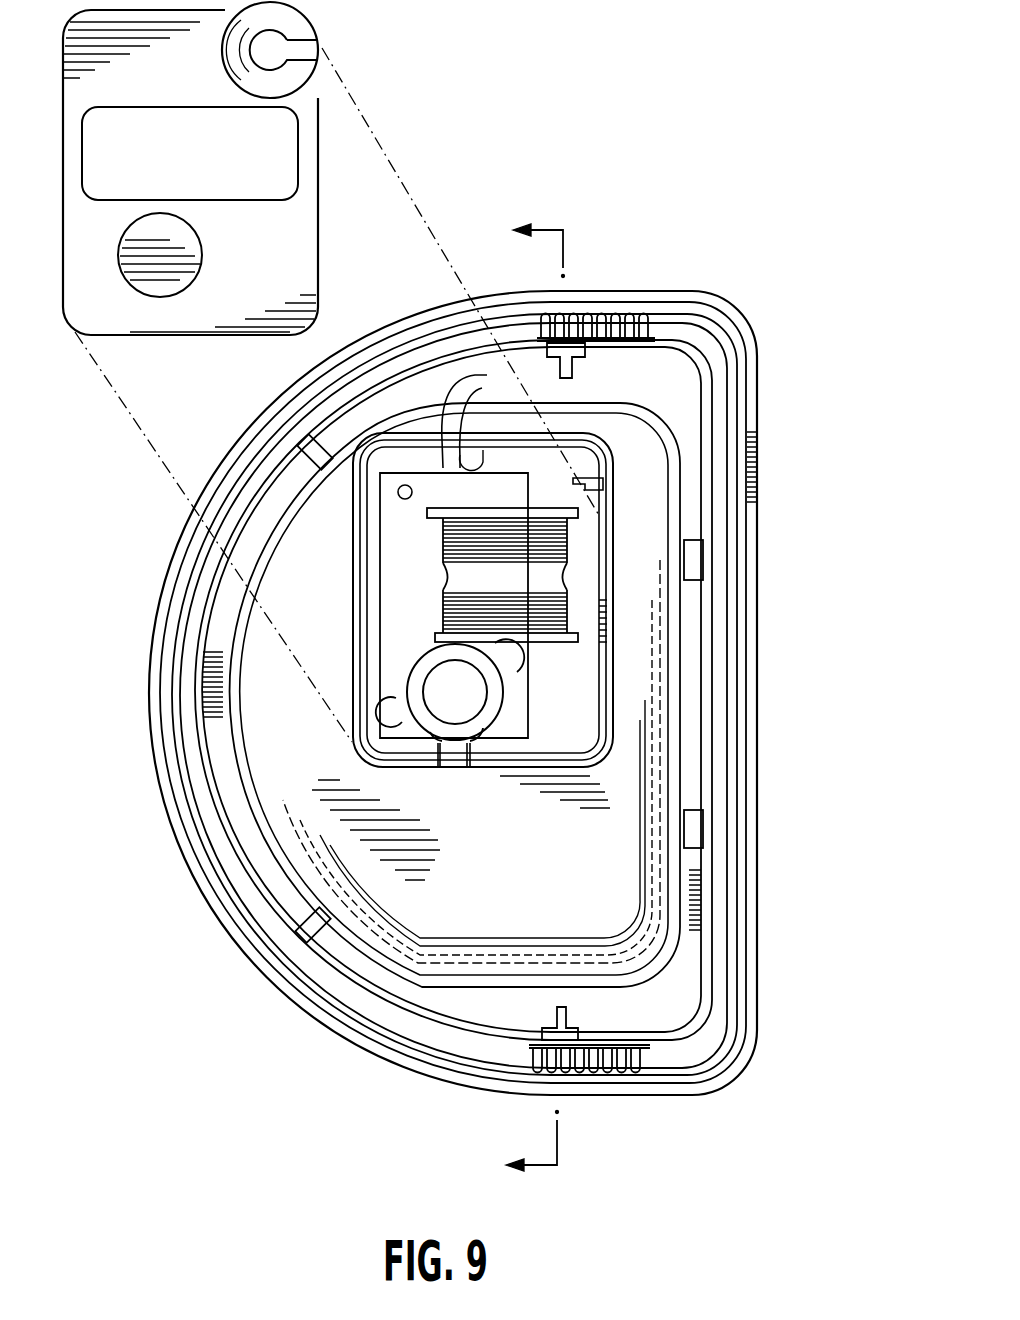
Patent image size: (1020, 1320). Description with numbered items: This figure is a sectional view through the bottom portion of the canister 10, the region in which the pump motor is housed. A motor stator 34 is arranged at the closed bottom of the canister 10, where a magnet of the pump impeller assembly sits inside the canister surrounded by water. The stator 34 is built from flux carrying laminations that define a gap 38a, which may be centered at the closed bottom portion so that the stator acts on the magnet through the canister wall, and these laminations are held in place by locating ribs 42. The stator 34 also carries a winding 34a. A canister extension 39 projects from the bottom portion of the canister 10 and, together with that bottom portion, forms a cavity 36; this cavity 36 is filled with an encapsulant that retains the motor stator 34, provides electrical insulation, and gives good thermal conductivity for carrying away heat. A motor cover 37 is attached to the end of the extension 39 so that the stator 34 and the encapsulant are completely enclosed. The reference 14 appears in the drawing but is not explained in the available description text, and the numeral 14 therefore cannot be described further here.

The canister 10 is at (523, 699).
The housing 14 is at (758, 710).
The stator 34 is at (405, 555).
The winding 34a is at (563, 538).
The cavity 36 is at (578, 723).
The motor cover 37 is at (318, 195).
The gap 38a is at (440, 767).
The canister extension 39 is at (607, 587).
The locating ribs 42 is at (481, 417).